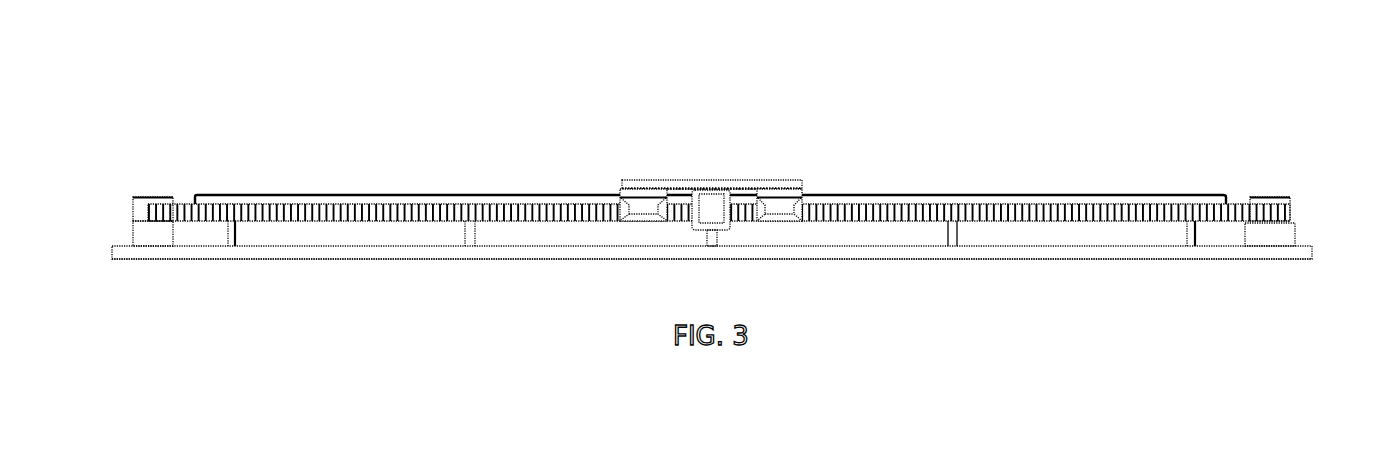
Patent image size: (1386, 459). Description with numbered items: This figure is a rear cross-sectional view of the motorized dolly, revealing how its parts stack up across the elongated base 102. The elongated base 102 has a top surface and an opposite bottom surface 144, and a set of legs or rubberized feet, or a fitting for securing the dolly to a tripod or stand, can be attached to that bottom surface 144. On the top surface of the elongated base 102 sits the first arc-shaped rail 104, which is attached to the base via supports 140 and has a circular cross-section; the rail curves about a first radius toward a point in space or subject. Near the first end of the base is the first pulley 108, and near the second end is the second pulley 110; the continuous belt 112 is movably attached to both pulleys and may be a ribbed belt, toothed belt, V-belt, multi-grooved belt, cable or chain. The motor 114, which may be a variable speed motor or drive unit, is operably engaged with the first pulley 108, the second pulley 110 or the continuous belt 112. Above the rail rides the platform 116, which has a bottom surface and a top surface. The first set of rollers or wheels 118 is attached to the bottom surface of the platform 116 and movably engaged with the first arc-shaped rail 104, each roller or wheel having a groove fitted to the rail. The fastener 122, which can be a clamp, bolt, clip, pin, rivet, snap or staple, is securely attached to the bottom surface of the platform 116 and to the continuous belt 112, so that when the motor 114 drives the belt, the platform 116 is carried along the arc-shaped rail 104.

The elongated base 102 is at (910, 253).
The first arc-shaped rail 104 is at (1038, 200).
The first pulley 108 is at (143, 198).
The second pulley 110 is at (1263, 203).
The continuous belt 112 is at (347, 207).
The motor 114 is at (1287, 233).
The platform 116 is at (675, 188).
The first set of rollers or wheels 118 is at (630, 190).
The fastener 122 is at (717, 188).
The supports 140 is at (235, 222).
The bottom surface of the elongated base 144 is at (626, 262).